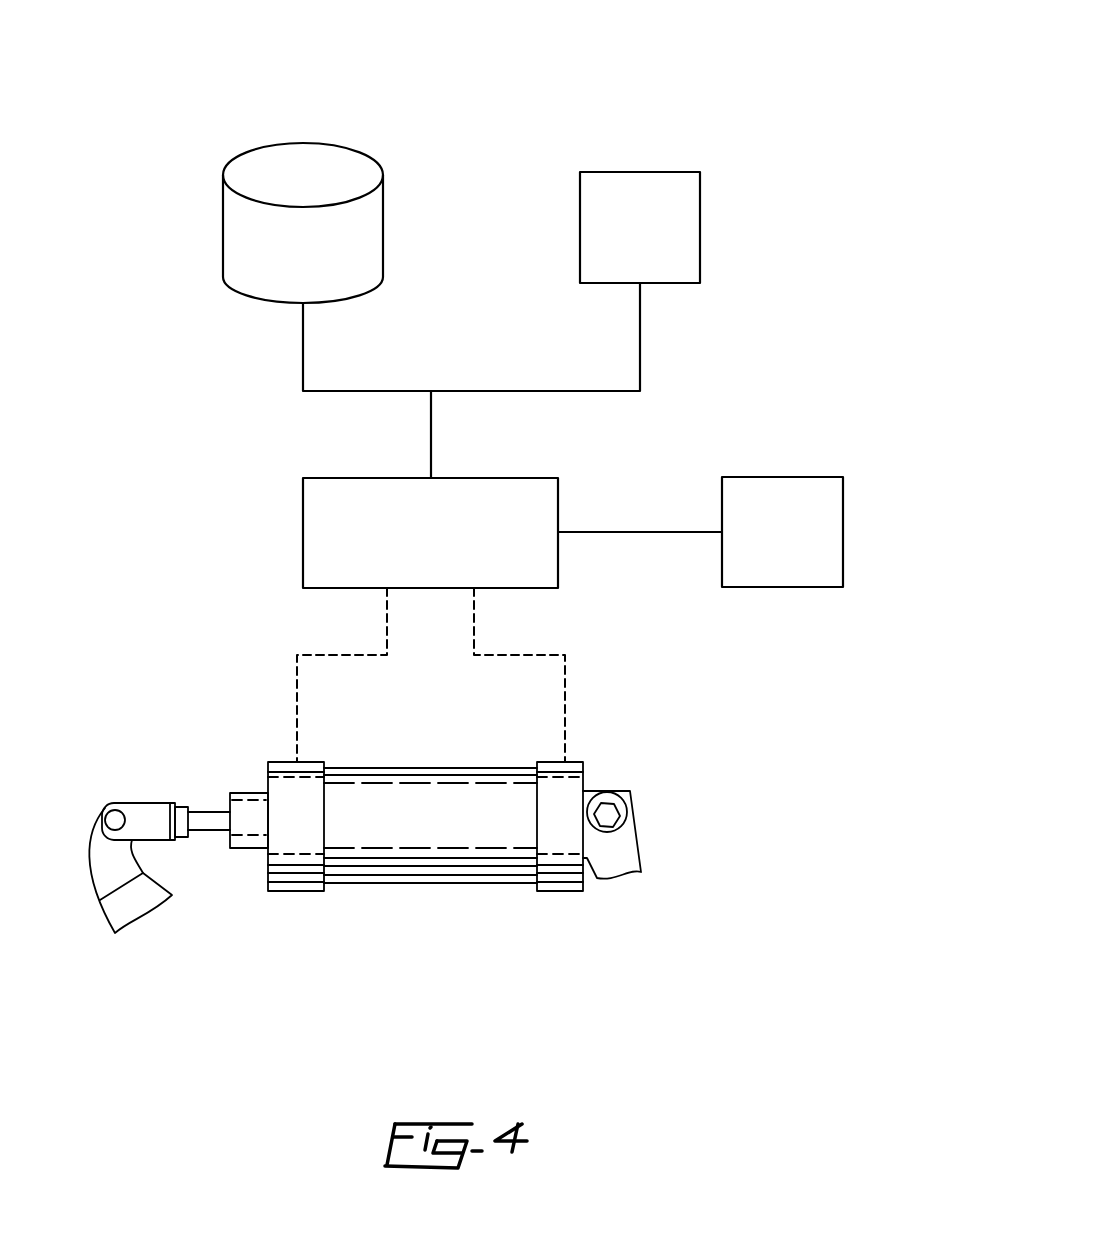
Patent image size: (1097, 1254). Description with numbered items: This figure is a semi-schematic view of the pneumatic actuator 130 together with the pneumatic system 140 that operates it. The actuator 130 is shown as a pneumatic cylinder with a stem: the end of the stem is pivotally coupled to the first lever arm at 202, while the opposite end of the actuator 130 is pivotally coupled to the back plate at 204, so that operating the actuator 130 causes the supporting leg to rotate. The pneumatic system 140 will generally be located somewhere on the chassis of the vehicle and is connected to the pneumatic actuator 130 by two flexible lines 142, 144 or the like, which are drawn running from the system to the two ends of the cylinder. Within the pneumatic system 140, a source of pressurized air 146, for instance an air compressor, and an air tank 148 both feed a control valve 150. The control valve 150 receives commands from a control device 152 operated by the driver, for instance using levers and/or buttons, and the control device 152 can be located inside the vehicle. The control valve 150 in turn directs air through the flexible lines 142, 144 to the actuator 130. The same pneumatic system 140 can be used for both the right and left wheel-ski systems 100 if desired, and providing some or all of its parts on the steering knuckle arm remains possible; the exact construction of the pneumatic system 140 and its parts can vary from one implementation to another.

The wheel-ski system 100 is at (183, 702).
The actuator 130 is at (465, 880).
The pneumatic system 140 is at (612, 130).
The flexible line 142 is at (297, 712).
The flexible line 144 is at (565, 705).
The source of pressurized air 146 is at (700, 225).
The air tank 148 is at (223, 220).
The control valve 150 is at (303, 532).
The control device 152 is at (790, 477).
The pivotal coupling of the stem end of the actuator 202 is at (115, 820).
The pivotal coupling of the opposite end of the actuator 204 is at (607, 815).